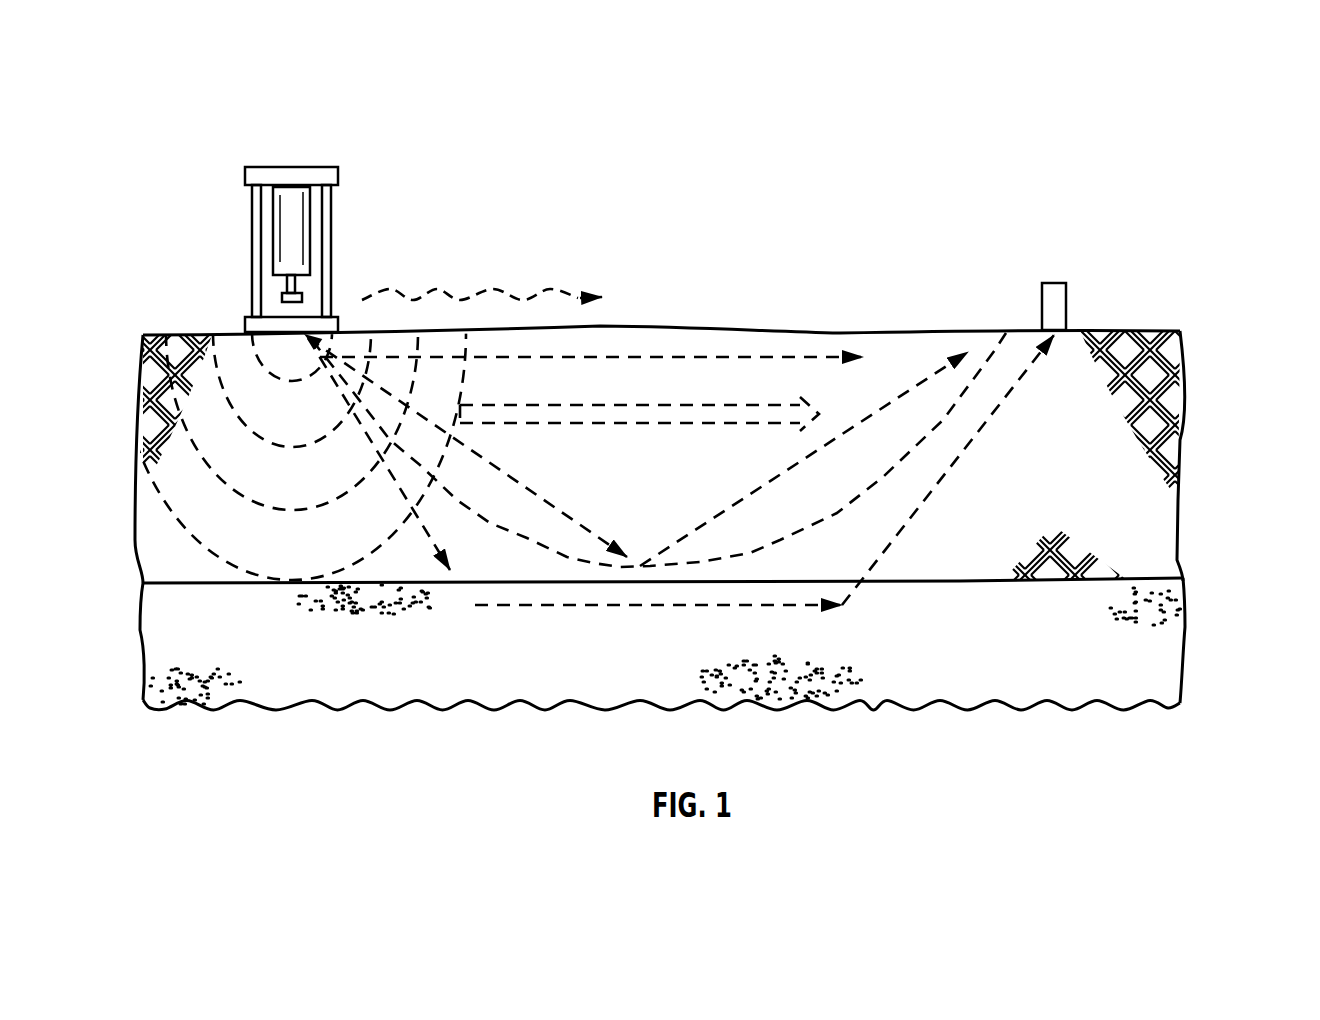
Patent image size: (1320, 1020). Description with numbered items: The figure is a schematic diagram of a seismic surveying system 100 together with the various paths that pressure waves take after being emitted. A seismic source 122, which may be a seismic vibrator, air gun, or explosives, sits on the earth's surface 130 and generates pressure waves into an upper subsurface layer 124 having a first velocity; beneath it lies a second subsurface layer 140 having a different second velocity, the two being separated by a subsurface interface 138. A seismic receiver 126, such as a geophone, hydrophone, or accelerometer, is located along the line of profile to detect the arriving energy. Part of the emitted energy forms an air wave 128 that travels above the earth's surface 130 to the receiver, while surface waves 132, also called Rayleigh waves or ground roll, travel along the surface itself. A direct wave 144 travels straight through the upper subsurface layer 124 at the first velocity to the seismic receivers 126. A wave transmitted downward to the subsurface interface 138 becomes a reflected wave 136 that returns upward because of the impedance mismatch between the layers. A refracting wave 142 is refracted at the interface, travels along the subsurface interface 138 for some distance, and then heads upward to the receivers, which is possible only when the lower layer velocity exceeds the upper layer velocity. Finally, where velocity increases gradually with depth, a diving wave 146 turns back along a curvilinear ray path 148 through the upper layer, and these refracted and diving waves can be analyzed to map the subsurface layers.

The seismic surveying system 100 is at (1020, 150).
The seismic source 122 is at (291, 166).
The subsurface layer 124 is at (1188, 448).
The seismic receivers 126 is at (1053, 282).
The air wave 128 is at (471, 297).
The earth's surface 130 is at (1130, 328).
The surface waves 132 is at (703, 343).
The reflected wave 136 is at (728, 507).
The subsurface interface 138 is at (917, 583).
The subsurface layer 140 is at (1188, 645).
The refracting wave 142 is at (625, 607).
The direct wave 144 is at (615, 426).
The diving wave 146 is at (883, 477).
The curvilinear ray path 148 is at (662, 568).